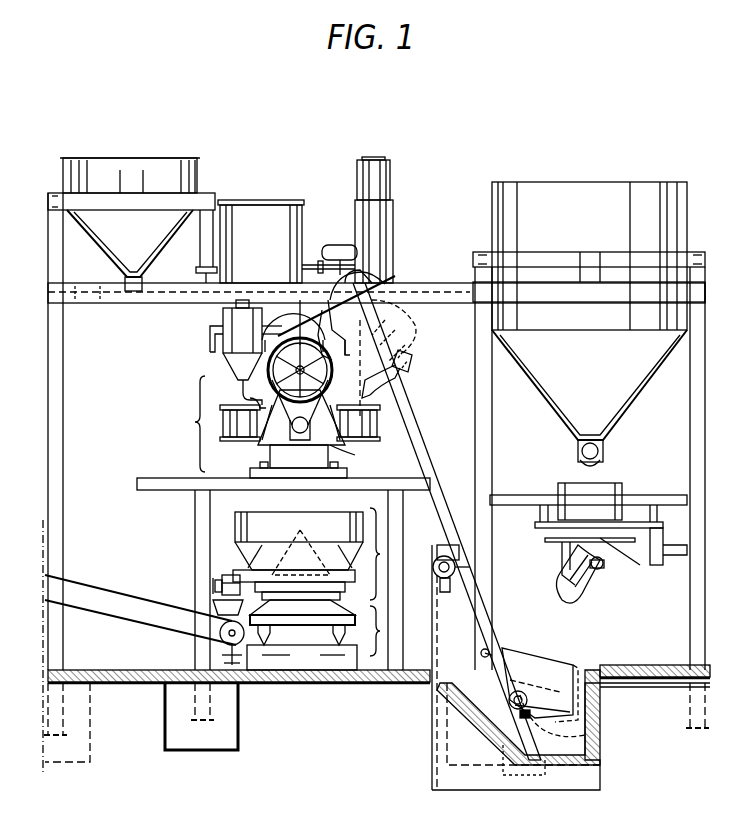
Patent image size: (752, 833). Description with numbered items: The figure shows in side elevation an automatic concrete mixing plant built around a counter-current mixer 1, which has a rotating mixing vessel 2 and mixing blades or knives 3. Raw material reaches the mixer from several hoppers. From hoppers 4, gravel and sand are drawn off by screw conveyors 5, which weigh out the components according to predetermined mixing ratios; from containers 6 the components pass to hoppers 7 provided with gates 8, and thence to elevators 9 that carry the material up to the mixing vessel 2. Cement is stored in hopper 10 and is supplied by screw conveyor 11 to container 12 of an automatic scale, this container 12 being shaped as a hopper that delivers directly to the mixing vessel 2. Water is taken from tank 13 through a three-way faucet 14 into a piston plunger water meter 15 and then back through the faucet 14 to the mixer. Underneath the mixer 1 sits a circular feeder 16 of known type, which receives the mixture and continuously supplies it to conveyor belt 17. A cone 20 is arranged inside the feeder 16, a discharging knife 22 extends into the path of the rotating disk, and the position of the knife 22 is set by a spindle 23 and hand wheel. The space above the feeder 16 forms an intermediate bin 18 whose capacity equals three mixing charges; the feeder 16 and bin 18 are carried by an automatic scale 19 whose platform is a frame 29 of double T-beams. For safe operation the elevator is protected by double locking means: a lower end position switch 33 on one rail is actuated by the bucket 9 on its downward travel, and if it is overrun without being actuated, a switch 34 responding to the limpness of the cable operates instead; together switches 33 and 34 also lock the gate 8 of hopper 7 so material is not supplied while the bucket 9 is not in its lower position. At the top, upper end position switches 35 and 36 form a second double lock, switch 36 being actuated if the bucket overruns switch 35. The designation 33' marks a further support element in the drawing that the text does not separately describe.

The counter-current mixer 1 is at (265, 389).
The rotating mixing vessel 2 is at (246, 436).
The mixing blades or knives 3 is at (250, 400).
The hoppers 4 is at (628, 397).
The screw conveyors 5 is at (605, 452).
The containers 6 is at (595, 492).
The hoppers 7 is at (570, 553).
The gates 8 is at (565, 590).
The elevators 9 is at (408, 328).
The hopper 10 is at (110, 228).
The screw conveyor 11 is at (152, 300).
The container 12 is at (222, 322).
The tank 13 is at (262, 207).
The three-way faucet 14 is at (338, 250).
The piston plunger water meter 15 is at (372, 230).
The circular feeder 16 is at (385, 554).
The conveyor belt 17 is at (162, 600).
The intermediate bin 18 is at (278, 522).
The automatic scale 19 is at (324, 635).
The cone 20 is at (335, 545).
The discharging knife 22 is at (236, 565).
The spindle 23 is at (228, 580).
The frame 29 is at (340, 442).
The lower end position switch 33 is at (560, 601).
The support 33' is at (462, 709).
The switch 34 is at (410, 362).
The upper end position switch 35 is at (372, 295).
The upper end position switch 36 is at (344, 360).